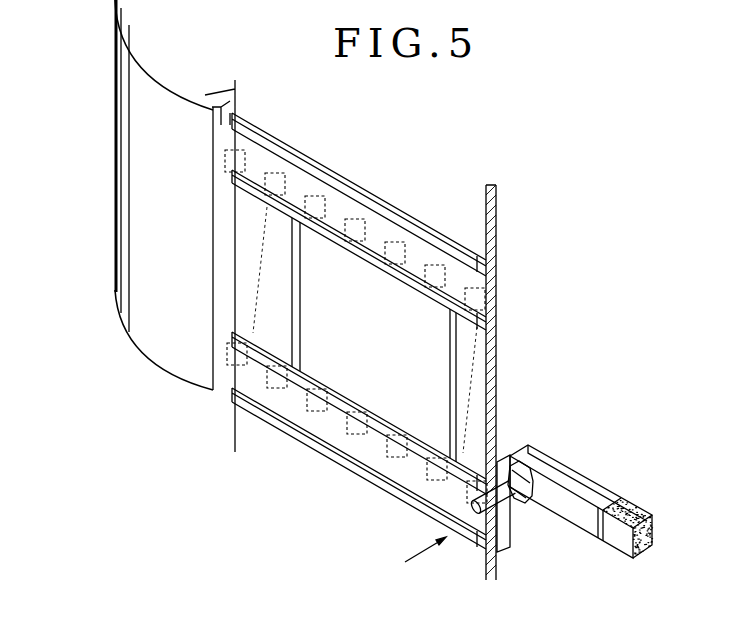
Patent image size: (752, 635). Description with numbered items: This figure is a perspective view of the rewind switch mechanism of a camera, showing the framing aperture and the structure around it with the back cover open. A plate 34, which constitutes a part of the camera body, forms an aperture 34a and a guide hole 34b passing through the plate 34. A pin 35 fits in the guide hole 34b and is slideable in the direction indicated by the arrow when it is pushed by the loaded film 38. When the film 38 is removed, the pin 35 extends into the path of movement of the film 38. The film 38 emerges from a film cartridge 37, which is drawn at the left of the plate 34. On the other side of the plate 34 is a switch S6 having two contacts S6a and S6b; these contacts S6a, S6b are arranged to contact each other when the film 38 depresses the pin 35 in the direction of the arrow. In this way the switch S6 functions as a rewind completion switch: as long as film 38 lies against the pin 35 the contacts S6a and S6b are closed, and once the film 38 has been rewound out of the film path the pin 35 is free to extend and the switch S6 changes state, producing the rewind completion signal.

The plate 34 is at (493, 335).
The aperture 34a is at (365, 368).
The guide hole 34b is at (497, 530).
The pin 35 is at (513, 507).
The film cartridge 37 is at (162, 340).
The film 38 is at (232, 368).
The switch S6 is at (642, 500).
The contact S6a is at (563, 482).
The contact S6b is at (602, 500).